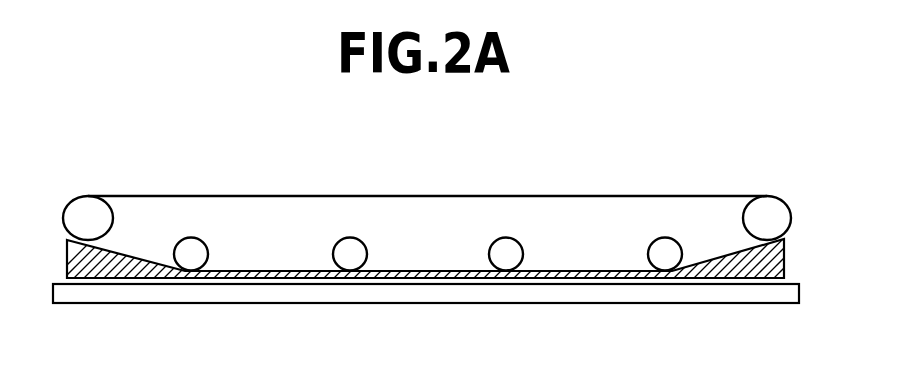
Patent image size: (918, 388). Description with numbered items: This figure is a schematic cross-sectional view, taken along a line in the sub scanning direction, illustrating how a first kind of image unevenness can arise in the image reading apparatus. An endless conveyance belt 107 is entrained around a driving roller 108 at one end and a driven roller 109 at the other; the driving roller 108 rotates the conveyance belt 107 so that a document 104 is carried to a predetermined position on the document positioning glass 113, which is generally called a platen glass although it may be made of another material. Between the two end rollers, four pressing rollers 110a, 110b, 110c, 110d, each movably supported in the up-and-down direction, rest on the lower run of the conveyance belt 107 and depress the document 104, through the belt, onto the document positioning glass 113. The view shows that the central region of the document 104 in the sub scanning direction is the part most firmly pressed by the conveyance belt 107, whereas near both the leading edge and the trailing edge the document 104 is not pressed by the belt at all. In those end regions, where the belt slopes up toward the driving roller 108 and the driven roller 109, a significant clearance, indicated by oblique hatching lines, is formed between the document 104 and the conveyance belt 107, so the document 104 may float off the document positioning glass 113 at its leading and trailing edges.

The document 104 is at (172, 272).
The conveyance belt 107 is at (577, 196).
The driving roller 108 is at (90, 196).
The driven roller 109 is at (768, 196).
The pressing roller 110a is at (191, 237).
The pressing roller 110b is at (350, 237).
The pressing roller 110c is at (506, 237).
The pressing roller 110d is at (665, 237).
The document positioning glass 113 is at (90, 303).